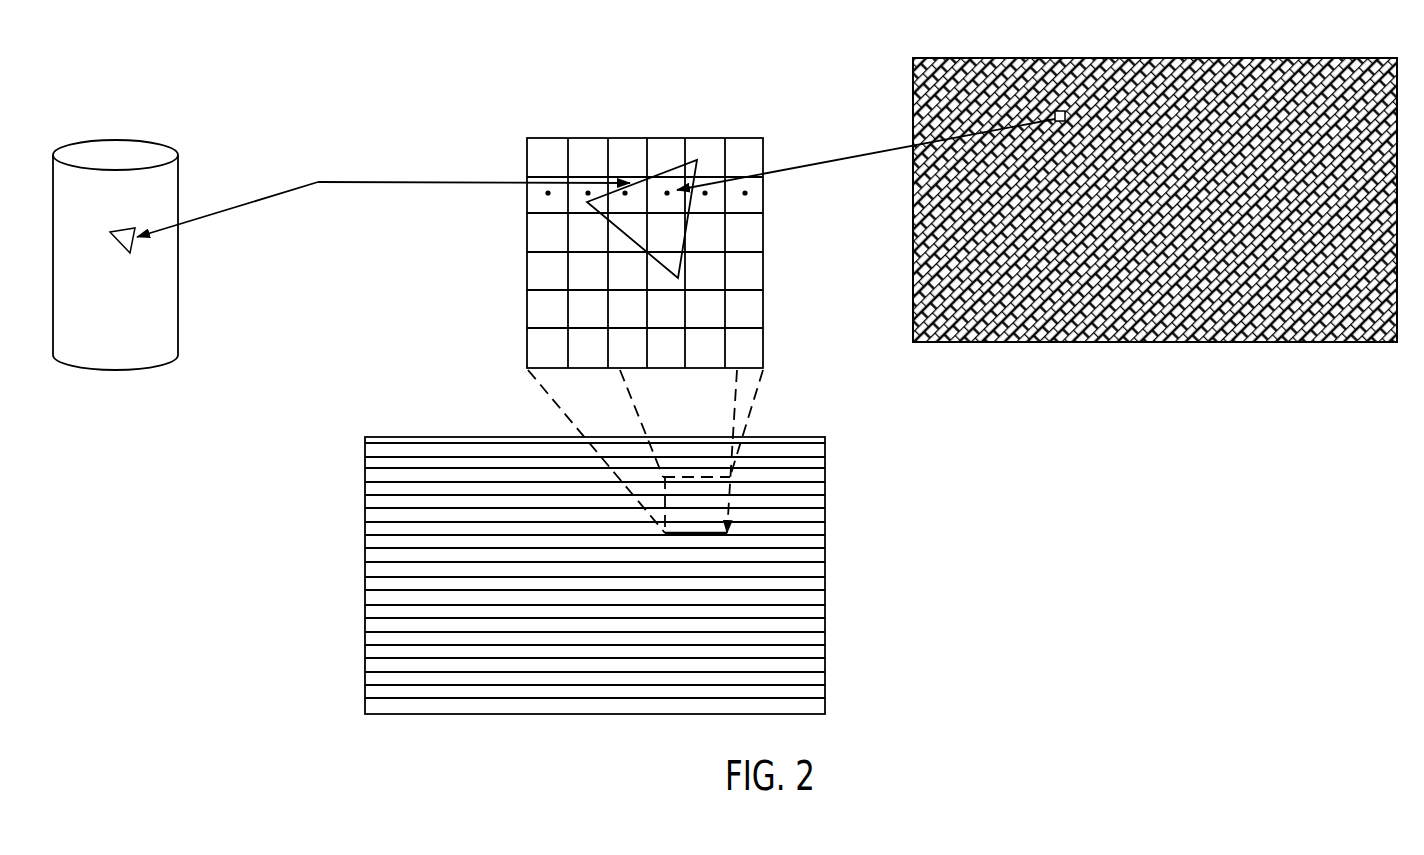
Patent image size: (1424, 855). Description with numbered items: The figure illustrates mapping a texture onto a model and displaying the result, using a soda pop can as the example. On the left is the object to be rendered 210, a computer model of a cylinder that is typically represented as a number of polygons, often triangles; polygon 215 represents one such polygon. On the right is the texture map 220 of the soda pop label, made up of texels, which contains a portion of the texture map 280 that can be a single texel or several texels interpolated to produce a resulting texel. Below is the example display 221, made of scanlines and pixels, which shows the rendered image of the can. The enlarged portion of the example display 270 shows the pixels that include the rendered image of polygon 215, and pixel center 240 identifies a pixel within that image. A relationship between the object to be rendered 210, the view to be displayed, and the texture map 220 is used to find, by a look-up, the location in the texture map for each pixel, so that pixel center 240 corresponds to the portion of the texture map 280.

The object to be rendered 210 is at (154, 192).
The polygon 215 is at (362, 181).
The texture map 220 is at (1228, 53).
The example display 221 is at (828, 580).
The pixel center 240 is at (671, 192).
The enlarged portion of the example display 270 is at (524, 278).
The portion of the texture map 280 is at (1061, 109).